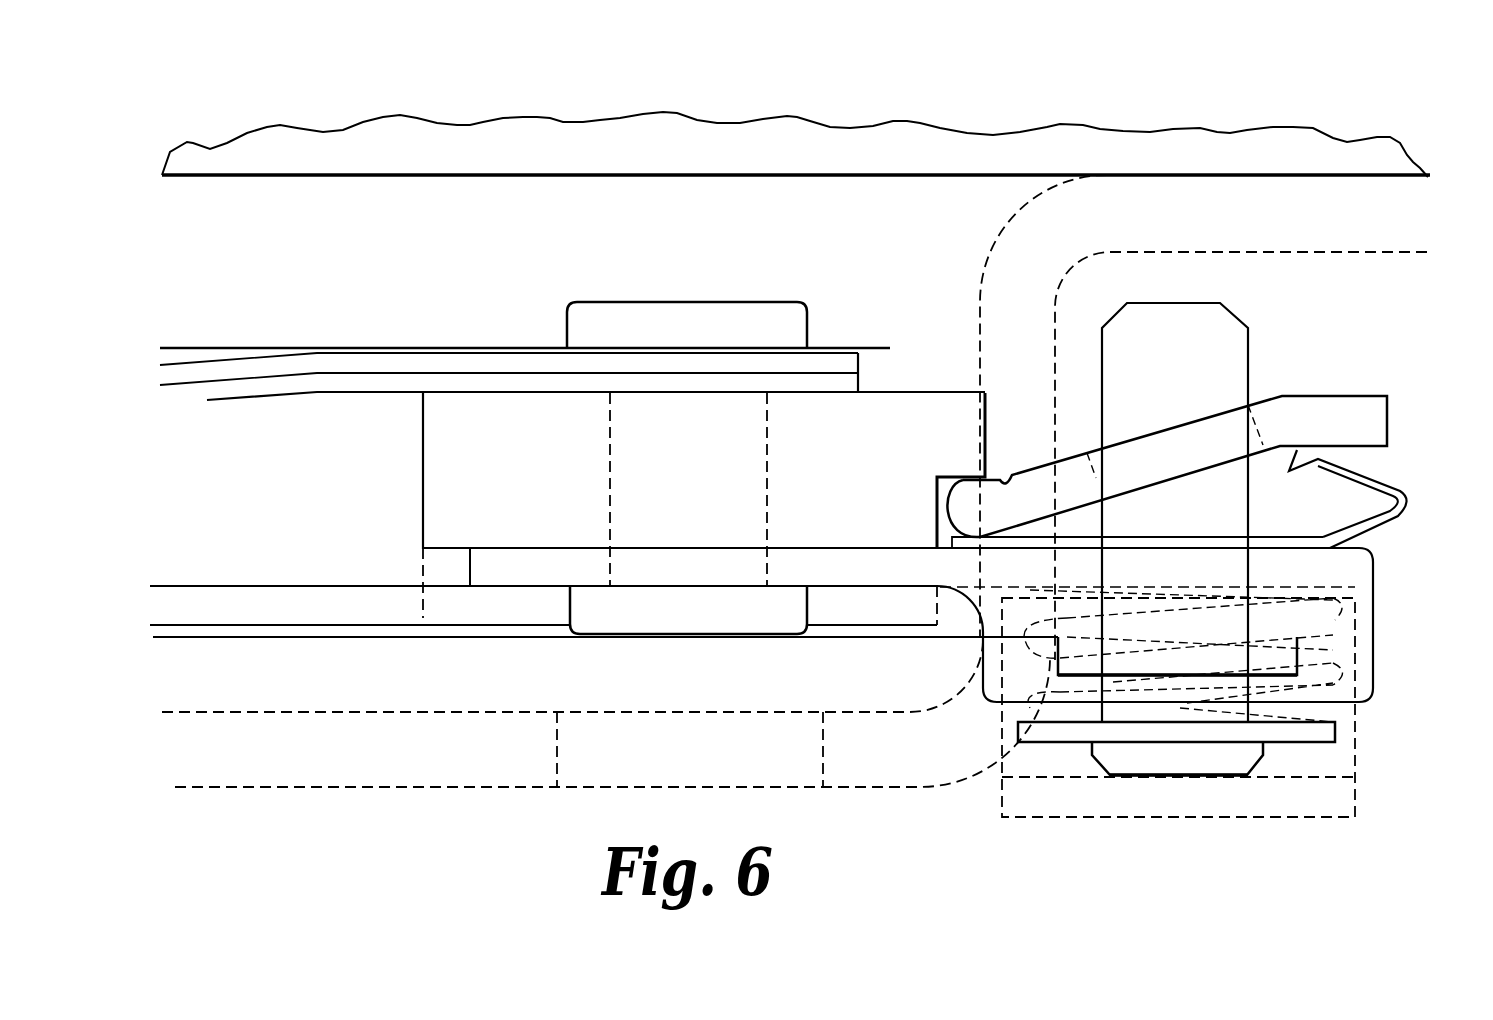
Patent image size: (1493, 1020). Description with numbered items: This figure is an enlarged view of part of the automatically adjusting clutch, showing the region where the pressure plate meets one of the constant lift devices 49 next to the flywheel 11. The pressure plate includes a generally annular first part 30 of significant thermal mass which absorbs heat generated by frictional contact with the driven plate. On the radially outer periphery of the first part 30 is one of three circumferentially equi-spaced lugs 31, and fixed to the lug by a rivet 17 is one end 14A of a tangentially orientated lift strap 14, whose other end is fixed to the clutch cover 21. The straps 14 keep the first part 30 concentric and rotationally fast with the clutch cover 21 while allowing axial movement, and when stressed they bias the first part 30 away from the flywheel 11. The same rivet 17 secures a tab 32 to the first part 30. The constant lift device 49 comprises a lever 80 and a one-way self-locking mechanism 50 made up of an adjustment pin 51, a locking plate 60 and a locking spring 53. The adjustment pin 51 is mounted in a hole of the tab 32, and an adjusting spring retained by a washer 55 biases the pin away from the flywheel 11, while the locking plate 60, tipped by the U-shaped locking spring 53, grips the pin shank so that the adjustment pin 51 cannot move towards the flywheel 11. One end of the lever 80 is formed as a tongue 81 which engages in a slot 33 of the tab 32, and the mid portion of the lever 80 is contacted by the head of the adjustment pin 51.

The flywheel 11 is at (425, 133).
The lift strap 14 is at (280, 362).
The end of lift strap 14A is at (478, 357).
The rivet 17 is at (617, 316).
The clutch cover 21 is at (363, 762).
The first part 30 is at (280, 486).
The lug 31 is at (844, 488).
The tab 32 is at (830, 562).
The slot 33 is at (1213, 676).
The constant lift device 49 is at (1100, 258).
The one-way self-locking mechanism 50 is at (1374, 384).
The adjustment pin 51 is at (1217, 345).
The locking spring 53 is at (1402, 504).
The washer 55 is at (1063, 733).
The locking plate 60 is at (1365, 421).
The lever 80 is at (1140, 797).
The tongue 81 is at (1288, 658).